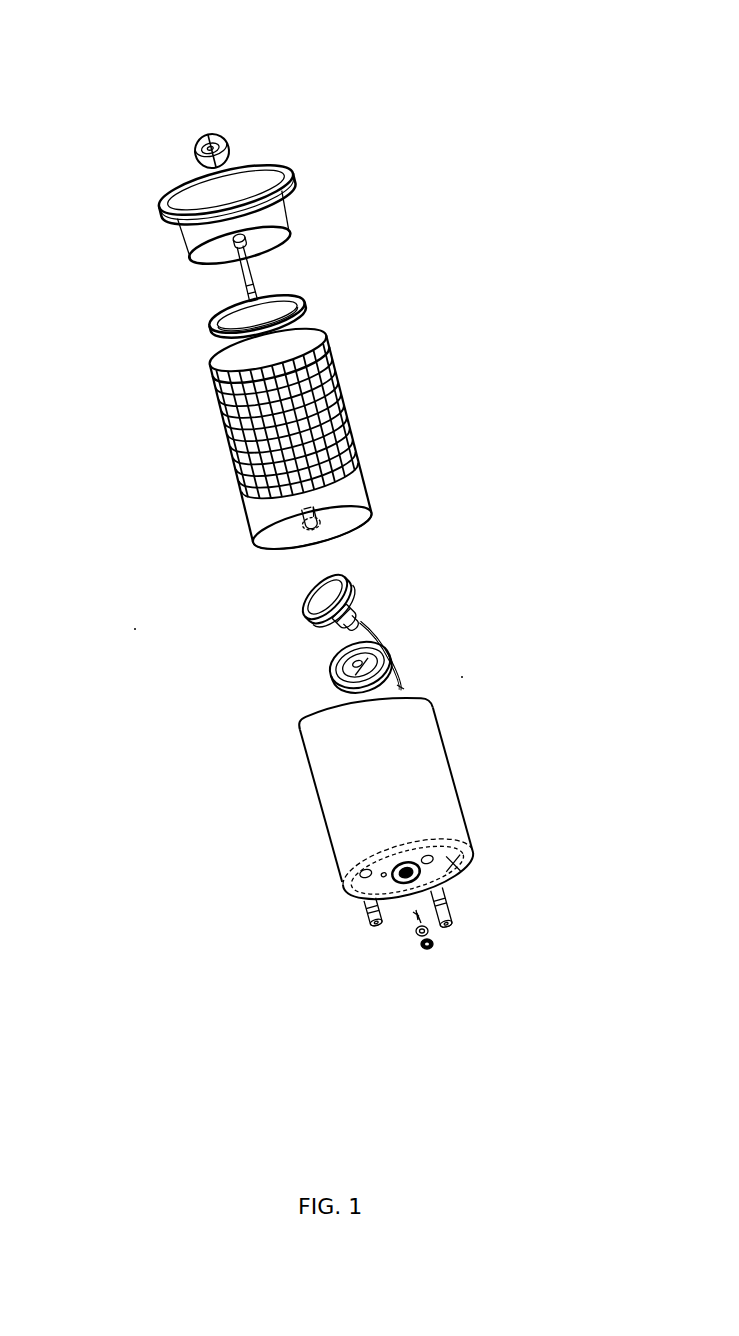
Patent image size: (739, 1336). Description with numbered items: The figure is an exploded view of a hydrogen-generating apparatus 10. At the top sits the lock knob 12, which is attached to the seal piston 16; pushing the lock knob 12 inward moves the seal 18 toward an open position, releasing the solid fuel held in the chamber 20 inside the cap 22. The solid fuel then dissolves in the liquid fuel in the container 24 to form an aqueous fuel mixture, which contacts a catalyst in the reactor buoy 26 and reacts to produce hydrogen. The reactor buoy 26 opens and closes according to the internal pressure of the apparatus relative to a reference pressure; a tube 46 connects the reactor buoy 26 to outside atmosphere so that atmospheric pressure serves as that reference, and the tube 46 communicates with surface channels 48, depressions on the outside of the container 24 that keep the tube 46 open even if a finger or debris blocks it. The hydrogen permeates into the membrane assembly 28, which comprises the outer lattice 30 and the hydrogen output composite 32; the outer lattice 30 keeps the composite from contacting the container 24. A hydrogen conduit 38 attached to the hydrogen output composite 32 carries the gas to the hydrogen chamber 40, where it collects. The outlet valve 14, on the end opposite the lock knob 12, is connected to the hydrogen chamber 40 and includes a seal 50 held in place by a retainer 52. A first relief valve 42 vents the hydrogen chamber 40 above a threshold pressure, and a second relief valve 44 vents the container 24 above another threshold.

The hydrogen-generating apparatus 10 is at (462, 236).
The lock knob 12 is at (229, 136).
The outlet valve 14 is at (340, 1023).
The seal piston 16 is at (240, 291).
The seal 18 is at (208, 318).
The chamber 20 is at (297, 230).
The cap 22 is at (310, 146).
The container 24 is at (443, 778).
The reactor buoy 26 is at (369, 588).
The membrane assembly 28 is at (110, 255).
The outer lattice 30 is at (222, 422).
The hydrogen output composite 32 is at (250, 528).
The hydrogen conduit 38 is at (304, 532).
The hydrogen chamber 40 is at (328, 660).
The first relief valve 42 is at (452, 906).
The second relief valve 44 is at (366, 894).
The tube 46 is at (389, 634).
The surface channels 48 is at (478, 862).
The seal 50 is at (416, 935).
The retainer 52 is at (422, 949).